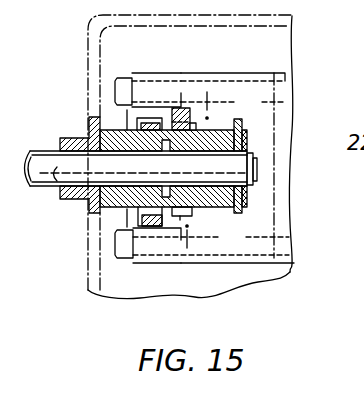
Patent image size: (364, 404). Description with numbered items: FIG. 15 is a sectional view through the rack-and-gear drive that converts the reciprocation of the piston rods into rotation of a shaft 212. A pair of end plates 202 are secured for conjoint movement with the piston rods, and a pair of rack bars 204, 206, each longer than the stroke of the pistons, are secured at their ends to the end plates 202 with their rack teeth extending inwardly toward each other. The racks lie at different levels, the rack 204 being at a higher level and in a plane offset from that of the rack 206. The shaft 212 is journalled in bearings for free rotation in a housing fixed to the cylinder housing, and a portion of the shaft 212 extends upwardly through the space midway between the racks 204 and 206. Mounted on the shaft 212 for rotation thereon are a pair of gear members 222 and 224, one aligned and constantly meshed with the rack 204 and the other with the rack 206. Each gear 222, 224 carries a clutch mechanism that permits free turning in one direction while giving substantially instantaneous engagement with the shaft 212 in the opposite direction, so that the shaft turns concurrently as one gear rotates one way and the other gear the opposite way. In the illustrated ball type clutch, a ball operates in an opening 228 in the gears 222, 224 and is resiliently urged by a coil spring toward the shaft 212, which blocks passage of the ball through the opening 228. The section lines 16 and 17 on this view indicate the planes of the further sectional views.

The section line 16— 16 is at (213, 99).
The section line 17— 17 is at (121, 120).
The end plate 202 is at (257, 76).
The rack bar 204 is at (181, 74).
The rack bar 206 is at (153, 226).
The shaft 212 is at (57, 184).
The gear member 222 is at (181, 216).
The gear member 224 is at (144, 118).
The opening 228 is at (240, 198).